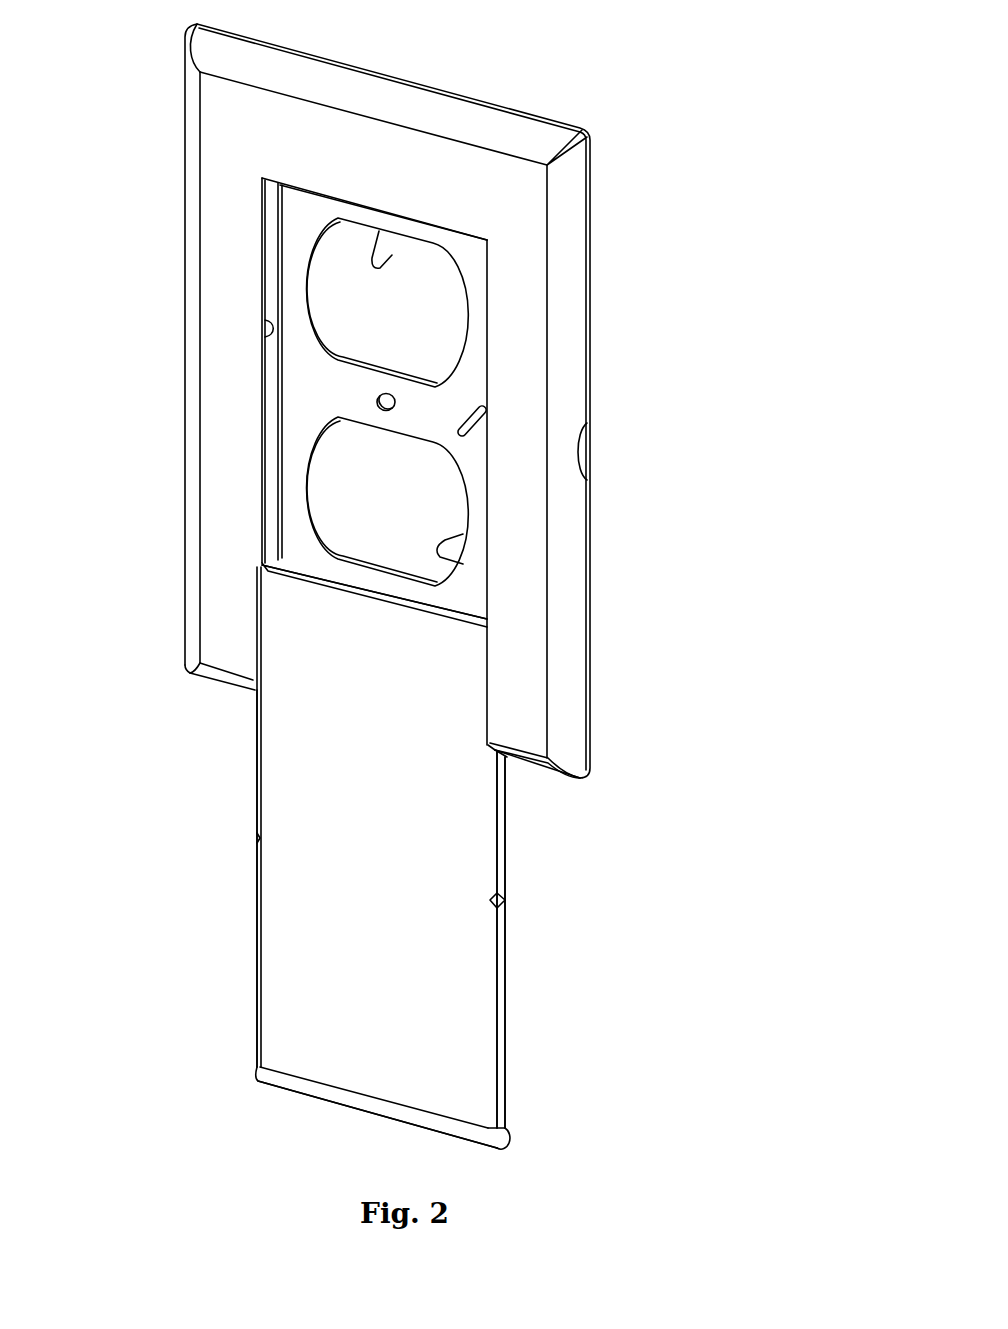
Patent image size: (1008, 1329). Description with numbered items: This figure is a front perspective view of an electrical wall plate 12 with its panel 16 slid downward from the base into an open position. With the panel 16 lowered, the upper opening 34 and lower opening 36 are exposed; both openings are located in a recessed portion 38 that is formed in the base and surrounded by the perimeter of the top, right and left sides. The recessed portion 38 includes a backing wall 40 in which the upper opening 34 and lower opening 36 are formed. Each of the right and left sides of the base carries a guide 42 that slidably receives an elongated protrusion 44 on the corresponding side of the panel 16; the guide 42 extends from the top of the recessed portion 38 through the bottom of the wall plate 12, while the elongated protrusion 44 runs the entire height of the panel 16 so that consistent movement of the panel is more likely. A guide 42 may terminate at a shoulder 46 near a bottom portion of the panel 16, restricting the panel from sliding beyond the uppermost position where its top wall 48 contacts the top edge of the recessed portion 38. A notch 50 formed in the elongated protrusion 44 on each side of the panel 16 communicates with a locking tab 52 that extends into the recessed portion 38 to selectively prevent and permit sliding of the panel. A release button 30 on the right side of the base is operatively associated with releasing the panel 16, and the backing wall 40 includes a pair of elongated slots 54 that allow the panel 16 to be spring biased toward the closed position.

The electrical wall plate 12 is at (650, 191).
The panel 16 is at (290, 893).
The release button 30 is at (580, 453).
The upper opening 34 is at (392, 255).
The lower opening 36 is at (463, 564).
The recessed portion 38 is at (470, 425).
The backing wall 40 is at (462, 385).
The guide 42 is at (265, 335).
The elongated protrusion 44 is at (267, 558).
The shoulder 46 is at (253, 1067).
The top wall 48 is at (300, 590).
The notch 50 is at (257, 833).
The locking tab 52 is at (262, 440).
The elongated slot 54 is at (280, 230).